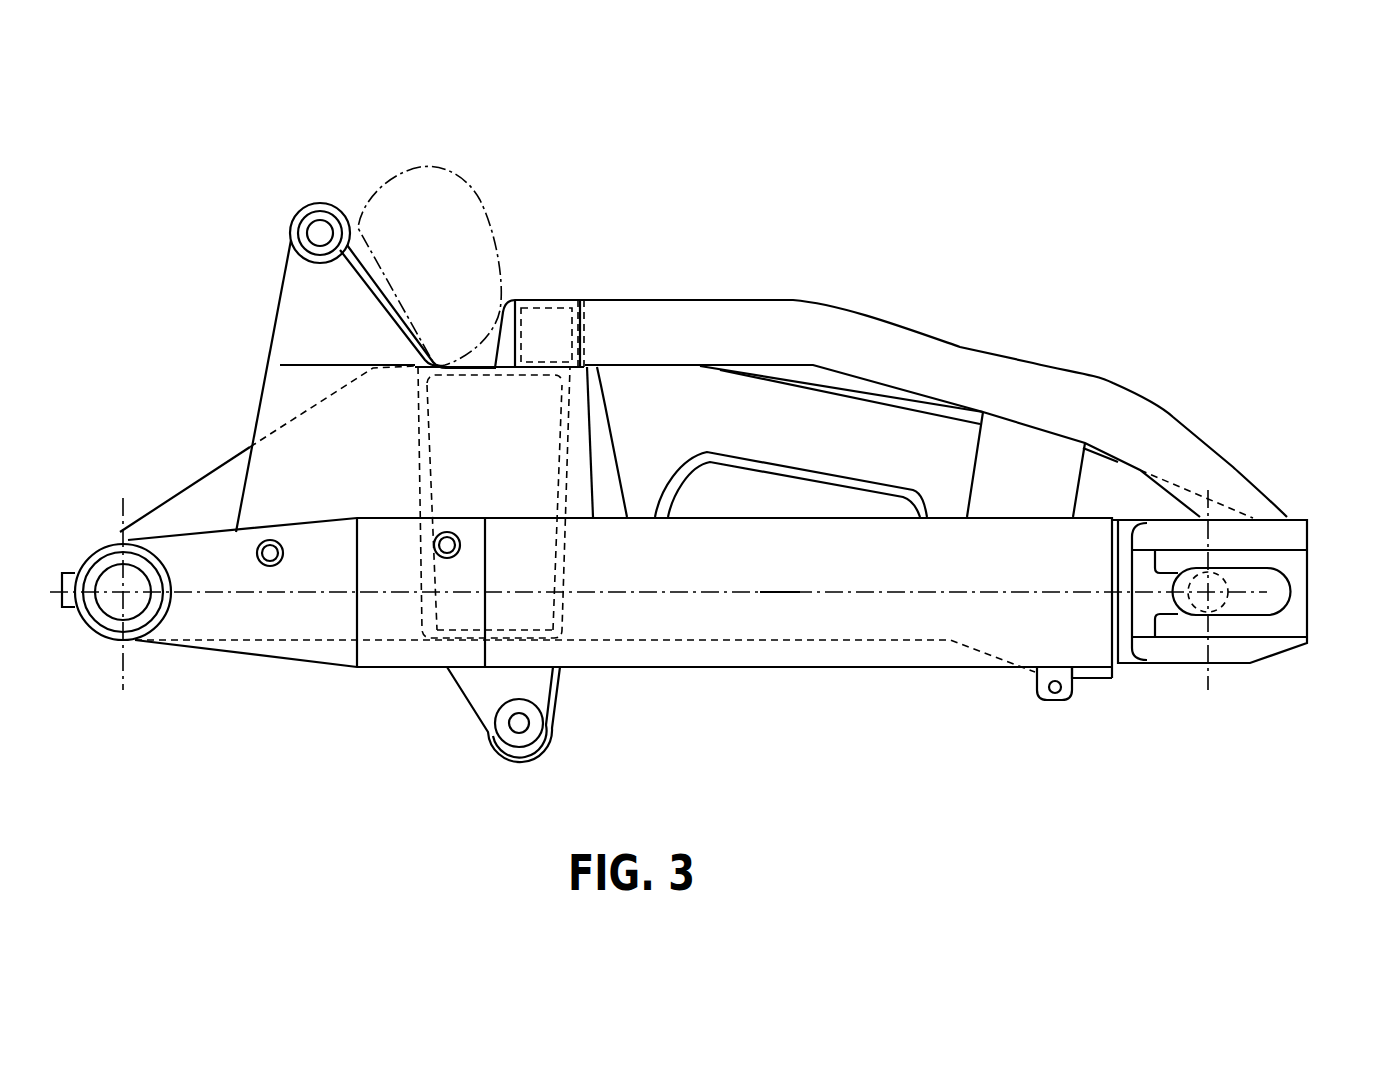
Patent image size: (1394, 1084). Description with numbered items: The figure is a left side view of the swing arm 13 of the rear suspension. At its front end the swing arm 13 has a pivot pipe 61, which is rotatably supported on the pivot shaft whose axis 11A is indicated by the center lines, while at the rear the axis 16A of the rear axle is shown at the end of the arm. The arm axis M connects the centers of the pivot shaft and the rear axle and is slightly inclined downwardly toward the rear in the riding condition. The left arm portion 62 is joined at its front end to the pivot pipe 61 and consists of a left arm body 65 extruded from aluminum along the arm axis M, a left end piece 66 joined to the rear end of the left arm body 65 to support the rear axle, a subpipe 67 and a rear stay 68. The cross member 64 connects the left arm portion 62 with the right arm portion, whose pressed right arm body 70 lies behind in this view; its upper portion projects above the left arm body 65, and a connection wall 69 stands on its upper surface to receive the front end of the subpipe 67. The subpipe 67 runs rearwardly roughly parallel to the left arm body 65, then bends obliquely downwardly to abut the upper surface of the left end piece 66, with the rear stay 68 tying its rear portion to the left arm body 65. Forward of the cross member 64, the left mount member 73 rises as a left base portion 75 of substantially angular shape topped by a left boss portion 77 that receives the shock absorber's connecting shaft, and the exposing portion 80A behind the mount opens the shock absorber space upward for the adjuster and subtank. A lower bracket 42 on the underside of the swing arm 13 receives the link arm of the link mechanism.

The swing arm 13 is at (862, 234).
The pivot pipe 61 is at (83, 558).
The axis of the pivot shaft 11A is at (123, 592).
The left boss portion 77 is at (333, 204).
The left mount member 73 is at (370, 246).
The left base portion 75 is at (383, 280).
The exposing portion 80A is at (488, 240).
The connection wall 69 is at (503, 320).
The subpipe 67 is at (940, 340).
The cross member 64 is at (570, 432).
The rear stay 68 is at (966, 462).
The lower bracket 42 is at (473, 718).
The left arm body 65 is at (645, 672).
The left arm portion 62 is at (711, 682).
The arm axis M is at (780, 593).
The right arm body 70 is at (879, 650).
The left end piece 66 is at (1307, 535).
The axis of the rear axle 16A is at (1187, 623).